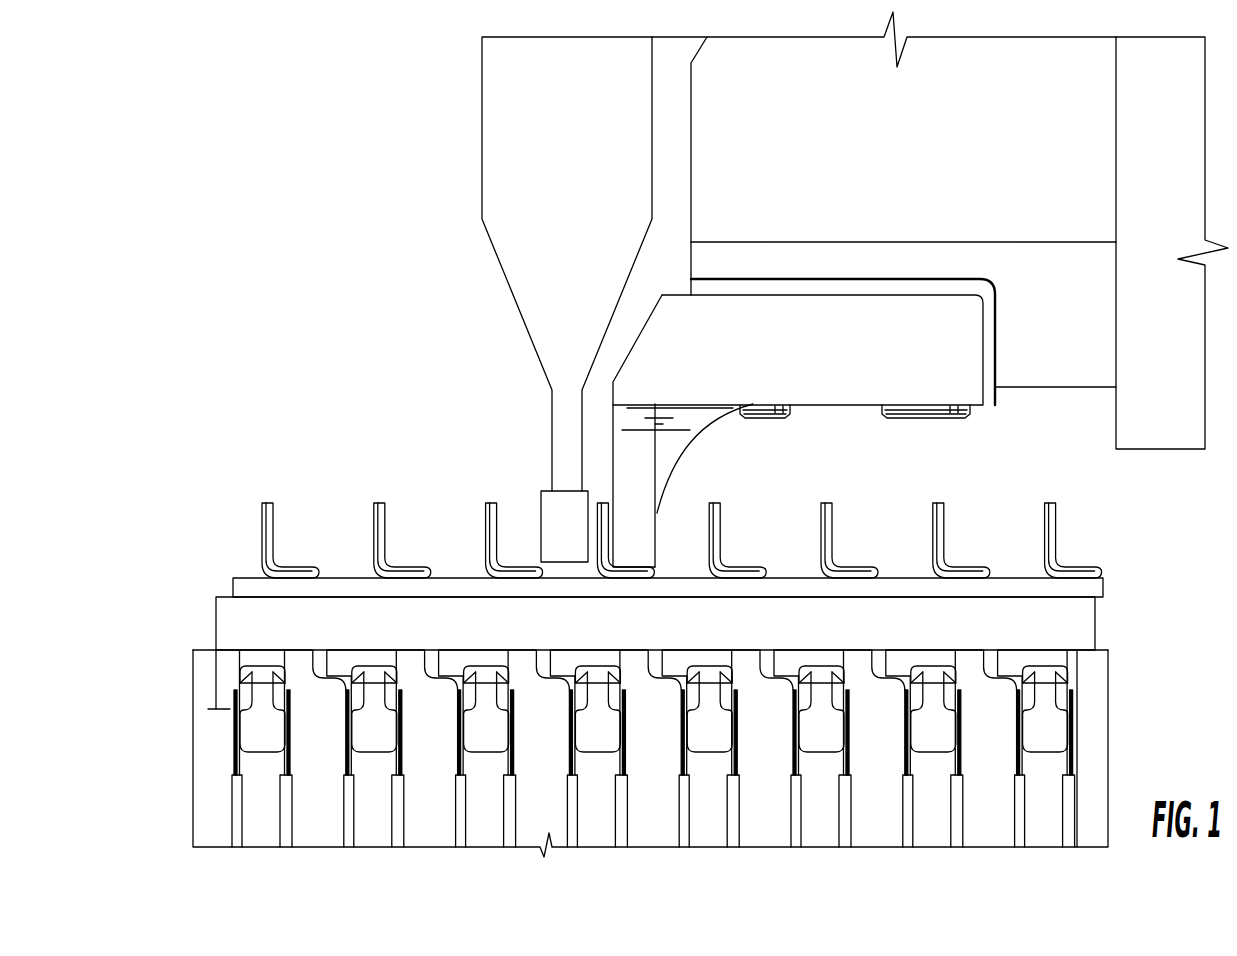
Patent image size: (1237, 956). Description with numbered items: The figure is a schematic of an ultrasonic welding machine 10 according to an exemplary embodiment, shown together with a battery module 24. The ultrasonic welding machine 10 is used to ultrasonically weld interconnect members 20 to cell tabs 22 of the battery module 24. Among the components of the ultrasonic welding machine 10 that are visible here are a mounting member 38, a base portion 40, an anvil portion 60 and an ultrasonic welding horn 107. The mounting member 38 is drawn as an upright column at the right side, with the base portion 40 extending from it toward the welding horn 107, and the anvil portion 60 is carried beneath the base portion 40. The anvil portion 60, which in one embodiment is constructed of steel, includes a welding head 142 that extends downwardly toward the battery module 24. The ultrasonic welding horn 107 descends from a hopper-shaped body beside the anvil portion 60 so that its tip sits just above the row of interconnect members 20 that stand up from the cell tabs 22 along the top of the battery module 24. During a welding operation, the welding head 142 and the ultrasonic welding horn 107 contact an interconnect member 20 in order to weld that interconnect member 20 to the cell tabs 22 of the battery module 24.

The ultrasonic welding machine 10 is at (445, 194).
The ultrasonic welding horn 107 is at (550, 500).
The base portion 40 is at (698, 215).
The mounting member 38 is at (1158, 431).
The anvil portion 60 is at (833, 390).
The welding head 142 is at (643, 532).
The interconnect member 20 is at (607, 543).
The cell tab 22 is at (595, 568).
The battery module 24 is at (199, 640).